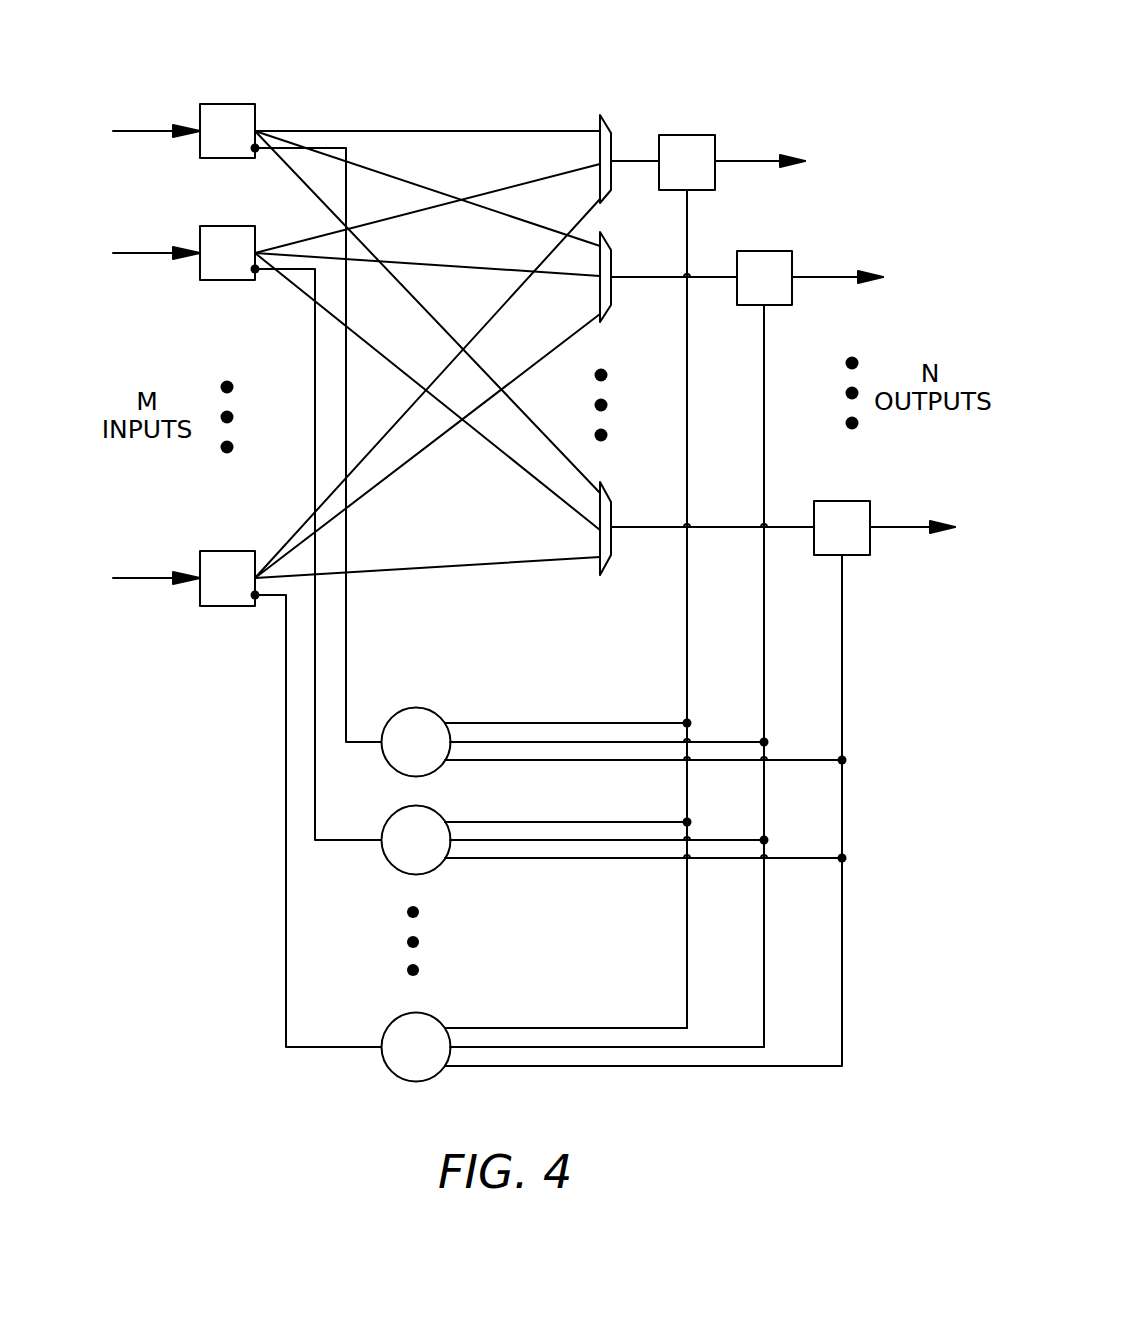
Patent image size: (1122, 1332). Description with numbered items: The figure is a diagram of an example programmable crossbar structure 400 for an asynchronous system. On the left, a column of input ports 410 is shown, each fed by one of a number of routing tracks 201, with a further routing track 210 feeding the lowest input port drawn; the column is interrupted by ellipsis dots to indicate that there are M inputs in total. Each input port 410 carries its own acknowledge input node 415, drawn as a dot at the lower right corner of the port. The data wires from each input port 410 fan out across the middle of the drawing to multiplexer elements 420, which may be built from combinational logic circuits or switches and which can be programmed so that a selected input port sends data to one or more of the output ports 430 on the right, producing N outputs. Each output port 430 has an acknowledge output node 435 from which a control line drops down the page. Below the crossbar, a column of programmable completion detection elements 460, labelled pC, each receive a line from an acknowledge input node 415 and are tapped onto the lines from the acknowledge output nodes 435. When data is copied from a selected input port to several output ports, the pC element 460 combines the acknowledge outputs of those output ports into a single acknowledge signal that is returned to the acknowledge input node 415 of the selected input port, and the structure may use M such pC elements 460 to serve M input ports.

The programmable crossbar structure 400 is at (782, 36).
The routing tracks 201 is at (140, 131).
The input signal 210 is at (140, 578).
The input port 410 is at (216, 104).
The acknowledge input node 415 is at (257, 151).
The multiplexer element 420 is at (606, 122).
The output port 430 is at (694, 135).
The acknowledge output node 435 is at (688, 195).
The programmable completion detection (pC) element 460 is at (440, 766).